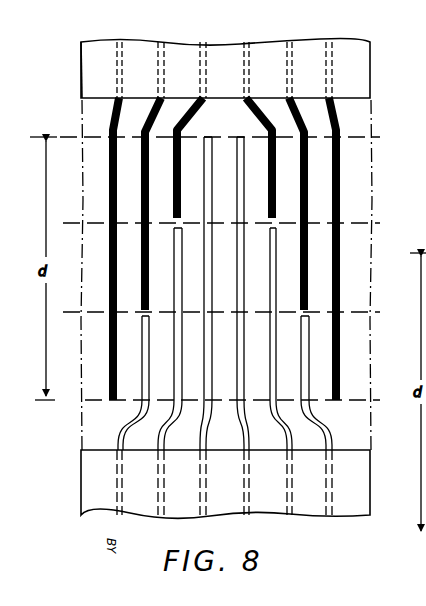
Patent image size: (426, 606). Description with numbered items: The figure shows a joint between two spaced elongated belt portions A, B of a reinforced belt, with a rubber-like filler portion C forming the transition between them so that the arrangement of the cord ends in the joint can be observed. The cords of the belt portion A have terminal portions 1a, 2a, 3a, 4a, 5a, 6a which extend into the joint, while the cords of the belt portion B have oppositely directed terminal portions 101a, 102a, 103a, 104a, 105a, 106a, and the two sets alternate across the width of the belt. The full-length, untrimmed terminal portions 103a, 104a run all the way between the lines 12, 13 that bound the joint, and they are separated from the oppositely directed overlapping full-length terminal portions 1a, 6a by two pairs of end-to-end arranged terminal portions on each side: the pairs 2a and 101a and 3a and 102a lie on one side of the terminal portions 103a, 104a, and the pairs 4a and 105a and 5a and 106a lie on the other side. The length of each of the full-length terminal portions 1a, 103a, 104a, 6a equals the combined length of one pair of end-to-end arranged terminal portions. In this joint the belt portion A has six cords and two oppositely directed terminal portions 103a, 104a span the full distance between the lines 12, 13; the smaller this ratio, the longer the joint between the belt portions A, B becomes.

The terminal portion 1a is at (115, 113).
The terminal portion 2a is at (140, 127).
The terminal portion 3a is at (172, 157).
The terminal portion 4a is at (275, 128).
The terminal portion 5a is at (308, 160).
The terminal portion 6a is at (341, 185).
The terminal portion 101a is at (142, 345).
The terminal portion 102a is at (174, 278).
The terminal portion 103a is at (204, 194).
The terminal portion 104a is at (245, 207).
The terminal portion 105a is at (273, 241).
The terminal portion 106a is at (305, 333).
The line 12 is at (62, 404).
The line 13 is at (34, 141).
The belt portion A is at (388, 70).
The belt portion B is at (66, 491).
The filler portion C is at (377, 283).